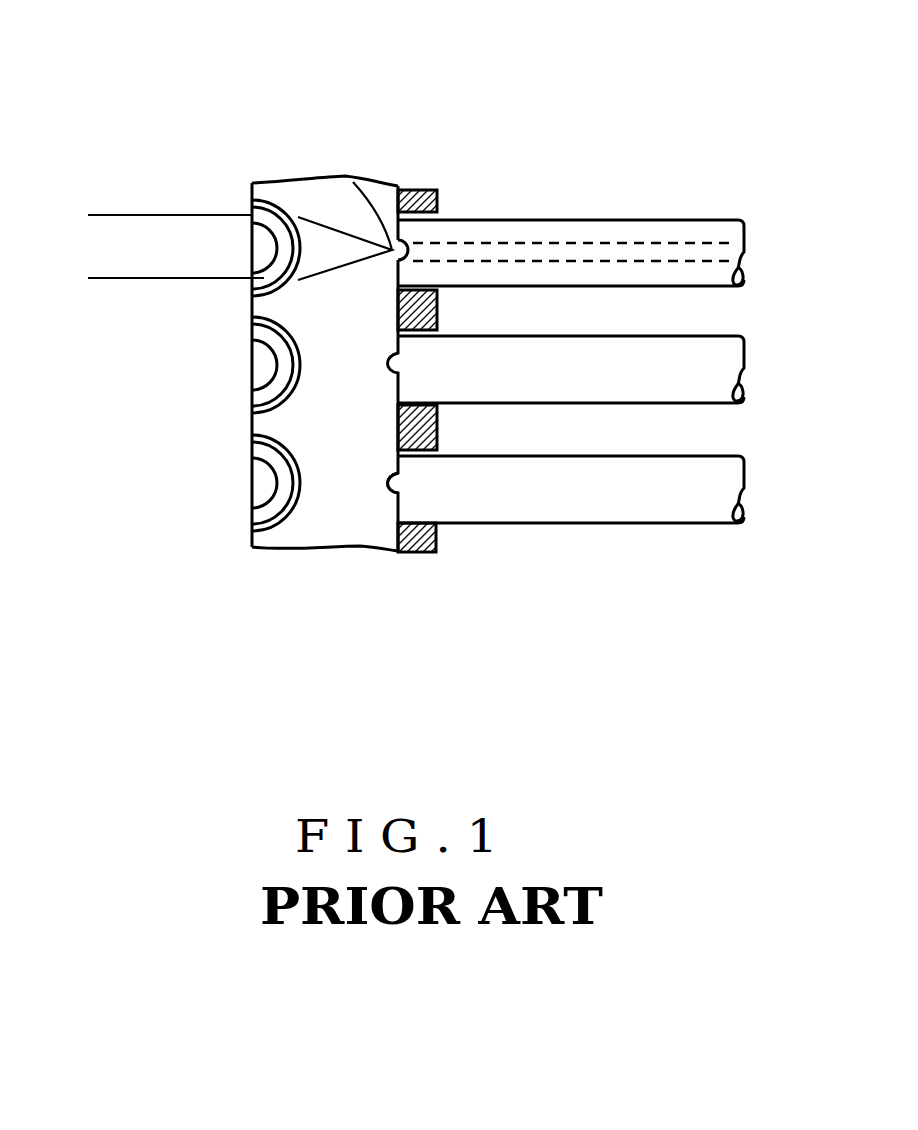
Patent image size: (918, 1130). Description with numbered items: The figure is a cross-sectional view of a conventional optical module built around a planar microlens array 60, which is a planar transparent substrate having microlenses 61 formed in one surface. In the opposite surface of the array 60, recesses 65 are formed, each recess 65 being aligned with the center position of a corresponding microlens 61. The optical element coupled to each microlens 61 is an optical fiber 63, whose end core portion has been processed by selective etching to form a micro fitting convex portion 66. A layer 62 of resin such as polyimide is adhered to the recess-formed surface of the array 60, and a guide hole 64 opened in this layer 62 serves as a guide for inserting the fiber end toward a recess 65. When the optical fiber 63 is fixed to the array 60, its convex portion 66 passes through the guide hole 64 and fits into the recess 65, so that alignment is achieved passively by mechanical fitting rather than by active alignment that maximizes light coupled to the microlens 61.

The planar microlens array 60 is at (323, 530).
The microlens 61 is at (255, 483).
The layer of resin 62 is at (437, 190).
The optical fiber 63 is at (651, 219).
The guide hole 64 is at (423, 287).
The recess 65 is at (353, 182).
The fitting convex portion 66 is at (400, 483).